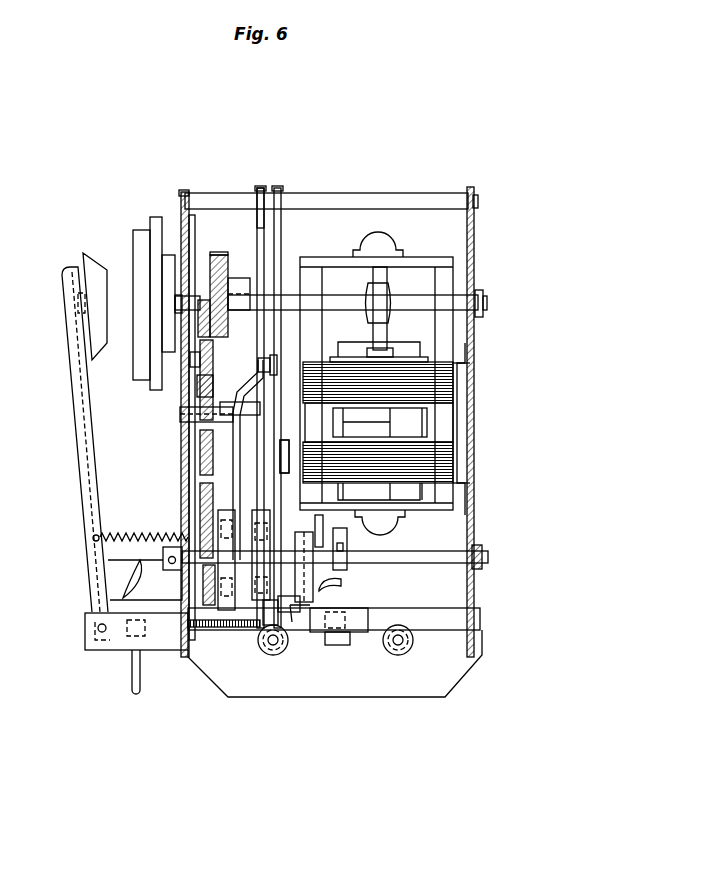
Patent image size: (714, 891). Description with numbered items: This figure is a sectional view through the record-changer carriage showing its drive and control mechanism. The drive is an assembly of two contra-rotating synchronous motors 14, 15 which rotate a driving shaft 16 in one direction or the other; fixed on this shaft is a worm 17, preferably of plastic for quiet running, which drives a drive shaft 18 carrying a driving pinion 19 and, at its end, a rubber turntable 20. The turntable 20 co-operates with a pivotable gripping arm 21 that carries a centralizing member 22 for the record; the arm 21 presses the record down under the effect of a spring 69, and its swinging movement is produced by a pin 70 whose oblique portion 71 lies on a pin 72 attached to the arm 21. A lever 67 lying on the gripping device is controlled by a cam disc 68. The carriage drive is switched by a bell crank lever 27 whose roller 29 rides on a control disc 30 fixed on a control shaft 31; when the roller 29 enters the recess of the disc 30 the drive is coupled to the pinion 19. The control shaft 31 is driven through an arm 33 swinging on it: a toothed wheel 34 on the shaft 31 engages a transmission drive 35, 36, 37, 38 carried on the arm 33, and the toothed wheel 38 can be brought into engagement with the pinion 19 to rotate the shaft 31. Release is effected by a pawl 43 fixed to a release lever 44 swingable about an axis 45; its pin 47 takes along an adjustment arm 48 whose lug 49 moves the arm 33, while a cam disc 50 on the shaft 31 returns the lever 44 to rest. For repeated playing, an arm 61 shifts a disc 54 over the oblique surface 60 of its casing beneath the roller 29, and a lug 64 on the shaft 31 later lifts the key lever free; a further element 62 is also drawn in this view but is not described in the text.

The synchronous motor 14 is at (455, 372).
The synchronous motor 15 is at (465, 462).
The driving shaft 16 is at (390, 424).
The worm 17 is at (380, 290).
The drive shaft 18 is at (422, 300).
The driving pinion 19 is at (250, 211).
The turntable 20 is at (150, 247).
The gripping arm 21 is at (75, 320).
The centralizing member 22 is at (93, 268).
The bell crank lever 27 is at (200, 442).
The roller 29 is at (200, 473).
The control disc 30 is at (222, 612).
The control shaft 31 is at (490, 557).
The arm 33 is at (182, 212).
The toothed wheel 34 is at (210, 600).
The transmission drive wheel 35 is at (200, 497).
The transmission drive wheel 36 is at (213, 393).
The transmission drive wheel 37 is at (192, 362).
The toothed wheel 38 is at (218, 252).
The pawl 43 is at (286, 444).
The release lever 44 is at (279, 240).
The axis 45 is at (410, 204).
The pin 47 is at (266, 385).
The adjustment arm 48 is at (262, 212).
The lug 49 is at (218, 415).
The cam disc 50 is at (284, 652).
The disc 54 is at (260, 510).
The oblique surface 60 is at (292, 622).
The arm 61 is at (267, 603).
The pin 62 is at (322, 528).
The lug 64 is at (346, 540).
The lever 67 is at (302, 601).
The cam disc 68 is at (323, 575).
The spring 69 is at (140, 535).
The pin 70 is at (165, 593).
The oblique portion 71 is at (128, 600).
The pin 72 is at (120, 580).